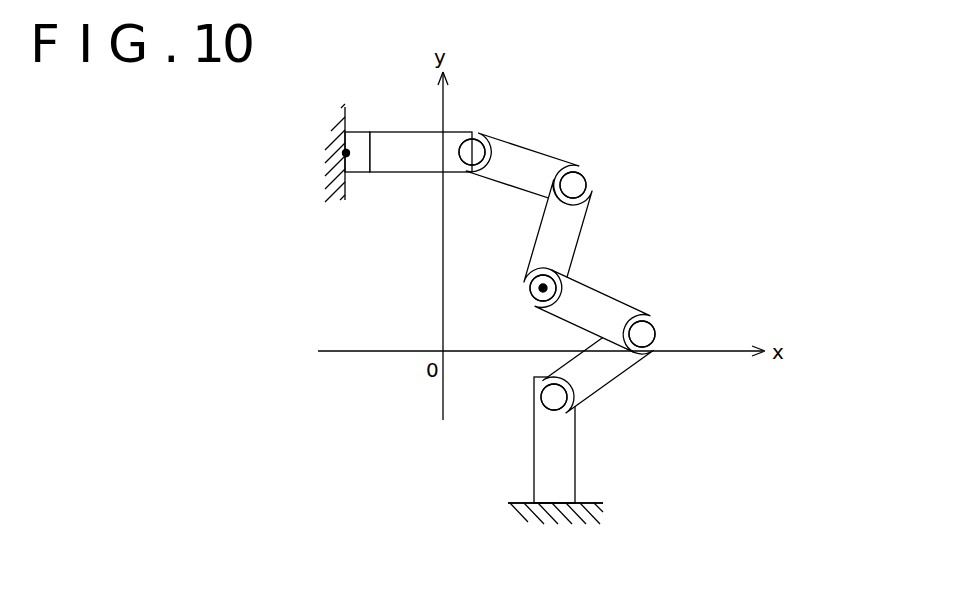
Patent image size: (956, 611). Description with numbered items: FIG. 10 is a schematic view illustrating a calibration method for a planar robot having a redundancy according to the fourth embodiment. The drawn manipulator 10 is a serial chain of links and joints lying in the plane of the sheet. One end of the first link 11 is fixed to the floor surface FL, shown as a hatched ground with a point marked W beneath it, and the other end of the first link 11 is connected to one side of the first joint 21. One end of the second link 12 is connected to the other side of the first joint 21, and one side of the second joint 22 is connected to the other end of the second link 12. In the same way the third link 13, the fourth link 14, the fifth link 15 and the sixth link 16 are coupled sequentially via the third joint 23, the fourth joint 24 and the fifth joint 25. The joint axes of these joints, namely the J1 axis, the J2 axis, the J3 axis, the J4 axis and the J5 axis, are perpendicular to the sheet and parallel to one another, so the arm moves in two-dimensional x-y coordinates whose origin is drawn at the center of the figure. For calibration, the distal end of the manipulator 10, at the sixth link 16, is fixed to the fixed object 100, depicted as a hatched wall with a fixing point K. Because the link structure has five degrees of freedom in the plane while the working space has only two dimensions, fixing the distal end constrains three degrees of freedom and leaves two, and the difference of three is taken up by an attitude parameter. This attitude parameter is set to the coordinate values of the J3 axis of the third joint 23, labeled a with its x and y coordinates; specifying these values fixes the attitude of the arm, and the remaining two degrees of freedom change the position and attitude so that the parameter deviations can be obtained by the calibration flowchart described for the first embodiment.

The manipulator 10 is at (586, 100).
The first link 11 is at (577, 490).
The second link 12 is at (605, 380).
The third link 13 is at (602, 293).
The fourth link 14 is at (580, 230).
The fifth link 15 is at (528, 155).
The sixth link 16 is at (416, 142).
The first joint 21 is at (540, 402).
The second joint 22 is at (652, 352).
The third joint 23 is at (535, 290).
The fourth joint 24 is at (590, 197).
The fifth joint 25 is at (473, 173).
The fixed object 100 is at (347, 183).
The J1 axis J1 is at (541, 394).
The J2 axis J2 is at (657, 326).
The J3 axis J3 is at (530, 283).
The J4 axis J4 is at (580, 183).
The J5 axis J5 is at (475, 152).
The fixed point K is at (350, 135).
The floor surface FL is at (515, 503).
The workpiece / floor position W is at (548, 497).
The position a(x,y) of joint J3 a is at (541, 290).